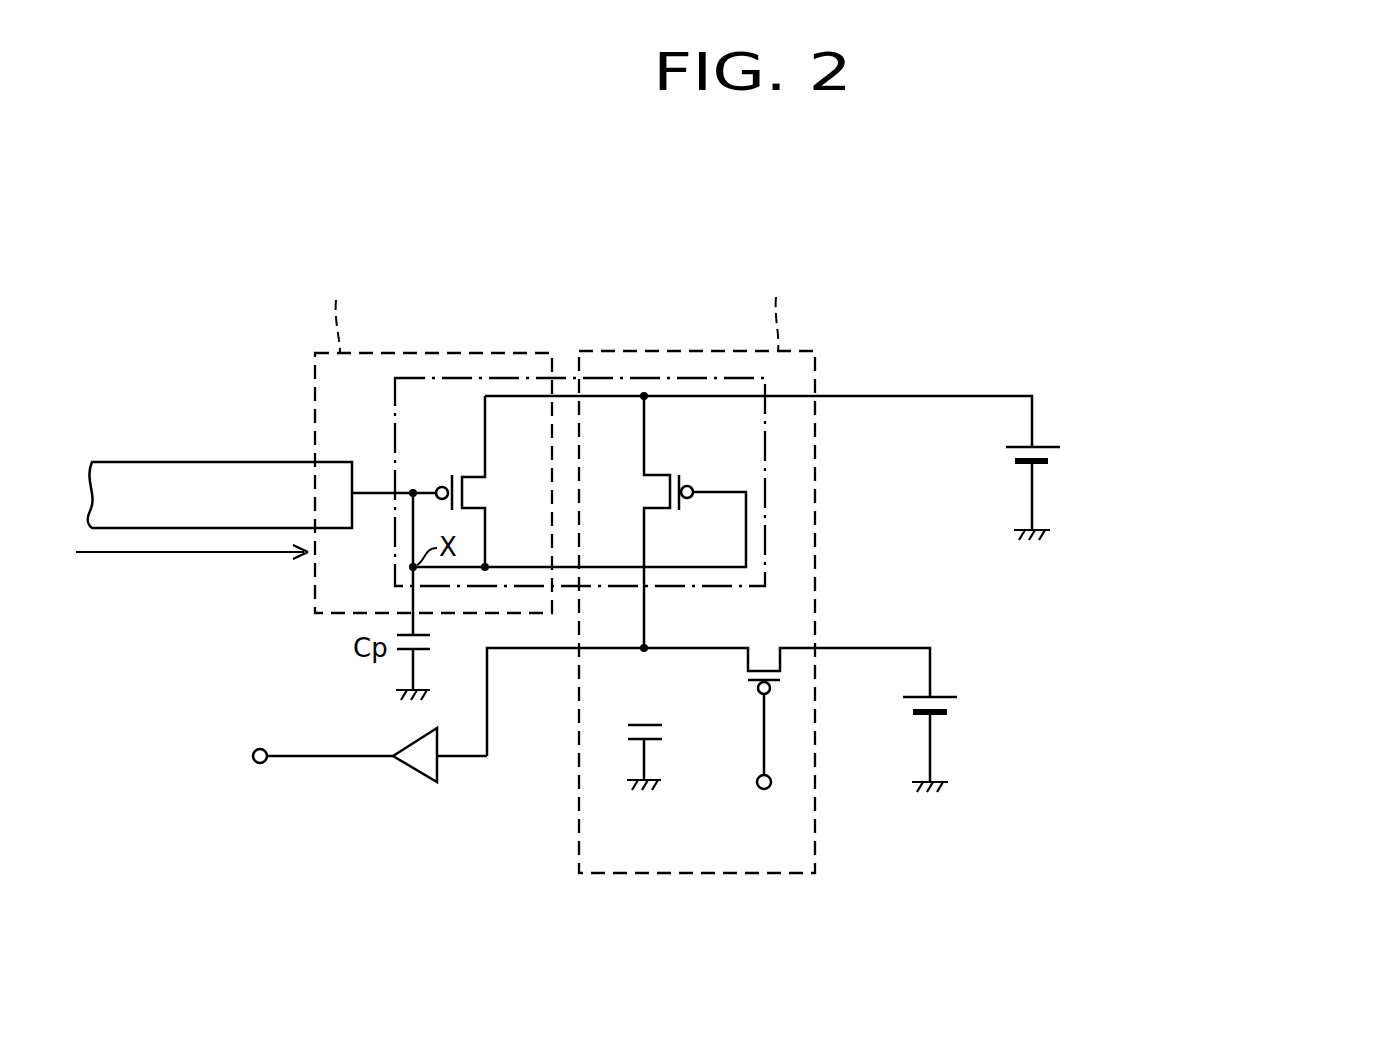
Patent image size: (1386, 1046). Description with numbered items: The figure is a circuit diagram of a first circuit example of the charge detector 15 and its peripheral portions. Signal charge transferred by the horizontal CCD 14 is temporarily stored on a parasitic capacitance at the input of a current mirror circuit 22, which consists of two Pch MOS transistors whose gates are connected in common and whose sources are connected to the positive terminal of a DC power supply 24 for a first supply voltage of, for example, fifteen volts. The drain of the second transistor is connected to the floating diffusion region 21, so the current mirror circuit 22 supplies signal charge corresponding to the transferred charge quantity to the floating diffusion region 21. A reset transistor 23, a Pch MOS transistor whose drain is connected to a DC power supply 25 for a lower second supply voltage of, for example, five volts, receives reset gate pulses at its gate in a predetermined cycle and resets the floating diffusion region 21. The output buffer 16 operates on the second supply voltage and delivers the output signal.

The horizontal CCD 14 is at (183, 461).
The charge detector 15 is at (912, 288).
The output buffer 16 is at (412, 766).
The floating diffusion region 21 is at (665, 731).
The current mirror circuit 22 is at (430, 378).
The reset transistor 23 is at (765, 652).
The DC power supply 24 is at (1005, 451).
The DC power supply 25 is at (901, 705).